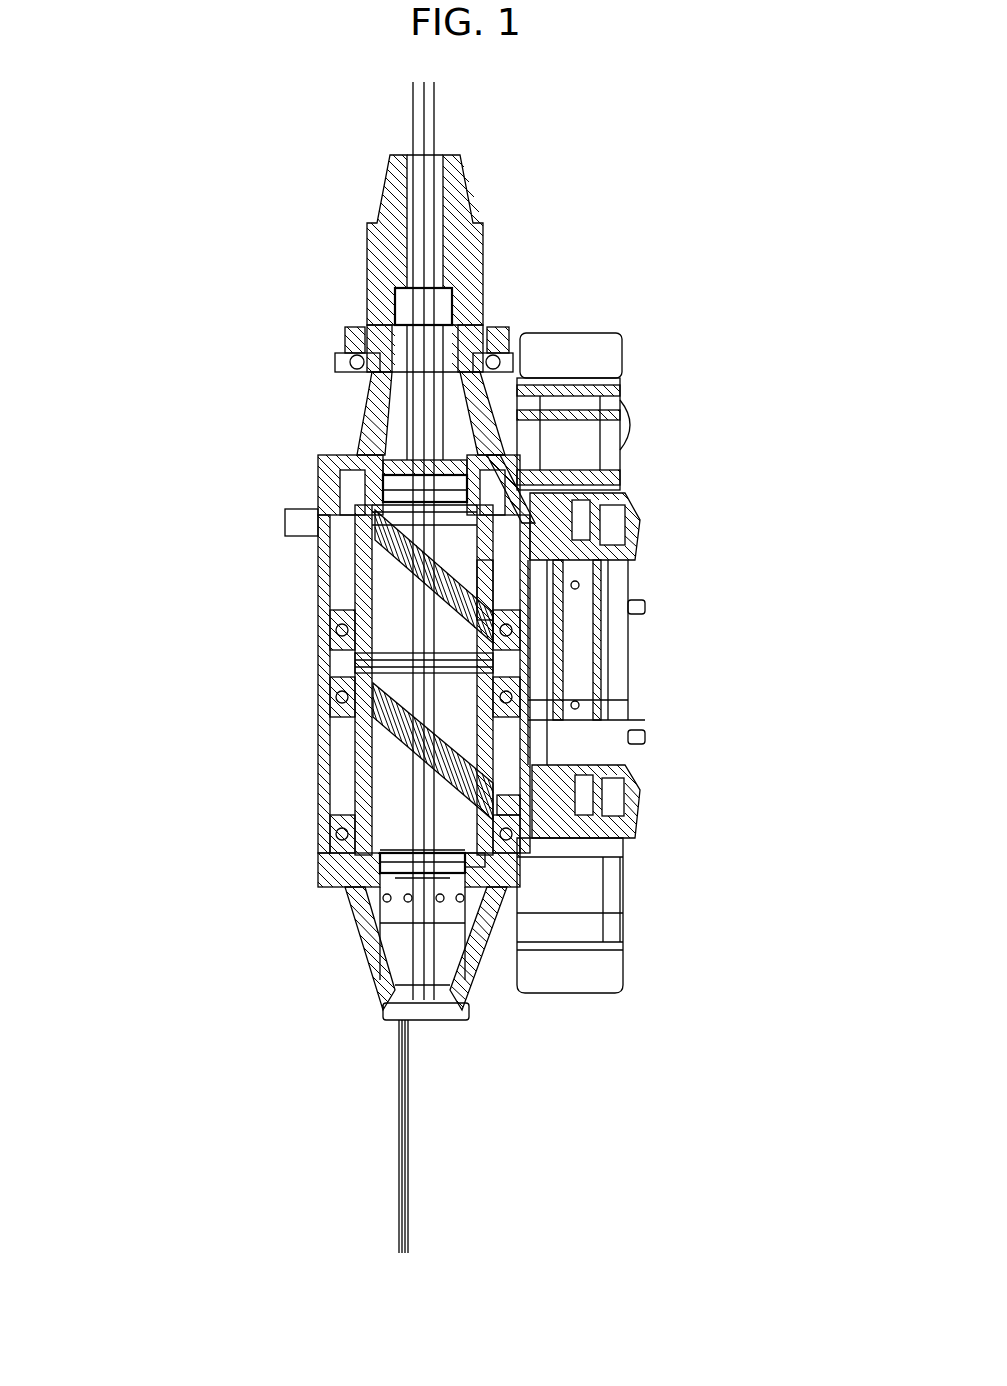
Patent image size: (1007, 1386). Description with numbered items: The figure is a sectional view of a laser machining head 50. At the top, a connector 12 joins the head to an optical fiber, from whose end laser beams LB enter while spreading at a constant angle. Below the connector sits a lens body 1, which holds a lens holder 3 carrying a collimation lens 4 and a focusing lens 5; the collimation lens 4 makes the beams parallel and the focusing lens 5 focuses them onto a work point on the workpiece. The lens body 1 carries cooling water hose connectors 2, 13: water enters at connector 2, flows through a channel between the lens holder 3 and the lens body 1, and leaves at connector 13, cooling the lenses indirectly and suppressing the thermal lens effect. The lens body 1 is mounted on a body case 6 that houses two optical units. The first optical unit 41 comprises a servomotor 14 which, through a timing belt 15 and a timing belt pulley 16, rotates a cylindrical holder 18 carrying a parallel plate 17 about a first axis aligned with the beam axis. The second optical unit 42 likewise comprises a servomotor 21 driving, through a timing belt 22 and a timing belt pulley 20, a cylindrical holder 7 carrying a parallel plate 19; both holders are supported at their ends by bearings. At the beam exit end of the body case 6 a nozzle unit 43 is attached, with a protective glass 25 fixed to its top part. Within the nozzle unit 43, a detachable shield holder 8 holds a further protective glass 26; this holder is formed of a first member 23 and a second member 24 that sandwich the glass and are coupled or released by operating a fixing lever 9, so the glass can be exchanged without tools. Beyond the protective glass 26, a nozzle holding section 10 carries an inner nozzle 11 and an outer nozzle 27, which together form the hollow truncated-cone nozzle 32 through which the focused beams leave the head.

The lens body 1 is at (369, 317).
The cooling water hose connector 2 is at (340, 346).
The lens holder 3 is at (386, 412).
The collimation lens 4 is at (390, 462).
The focusing lens 5 is at (390, 485).
The body case 6 is at (320, 586).
The holder 7 is at (493, 750).
The shield holder 8 is at (320, 863).
The fixing lever 9 is at (348, 870).
The nozzle holding section 10 is at (343, 912).
The inner nozzle 11 is at (370, 953).
The connector 12 is at (472, 197).
The cooling water hose connector 13 is at (510, 333).
The servomotor 14 is at (617, 335).
The timing belt 15 is at (510, 530).
The timing belt pulley 16 is at (600, 522).
The parallel plate 17 is at (440, 577).
The holder 18 is at (493, 597).
The parallel plate 19 is at (450, 748).
The timing belt pulley 20 is at (613, 795).
The servomotor 21 is at (615, 863).
The timing belt 22 is at (513, 803).
The first member 23 is at (478, 858).
The second member 24 is at (470, 866).
The protective glass 25 is at (448, 850).
The protective glass 26 is at (437, 870).
The outer nozzle 27 is at (377, 1007).
The nozzle 32 is at (108, 980).
The optical unit 41 is at (790, 265).
The optical unit 42 is at (790, 688).
The nozzle unit 43 is at (272, 967).
The laser machining head 50 is at (213, 77).
The laser beams LB is at (421, 650).